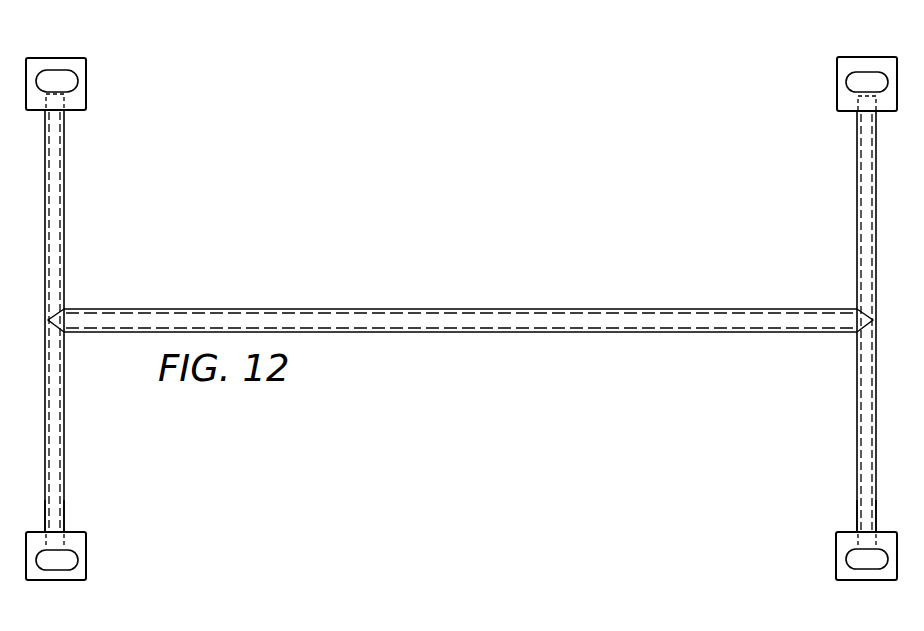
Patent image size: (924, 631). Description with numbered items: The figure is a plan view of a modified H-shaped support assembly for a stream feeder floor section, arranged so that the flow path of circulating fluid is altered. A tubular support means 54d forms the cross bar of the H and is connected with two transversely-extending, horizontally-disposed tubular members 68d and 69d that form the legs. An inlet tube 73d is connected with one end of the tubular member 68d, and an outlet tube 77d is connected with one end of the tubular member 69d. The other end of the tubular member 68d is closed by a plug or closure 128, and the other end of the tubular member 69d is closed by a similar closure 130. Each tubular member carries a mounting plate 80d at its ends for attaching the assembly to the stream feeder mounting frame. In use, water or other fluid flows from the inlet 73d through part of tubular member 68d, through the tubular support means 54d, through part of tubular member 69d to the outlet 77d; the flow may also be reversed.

The tubular support means 54d is at (420, 306).
The tubular member 68d is at (65, 377).
The tubular member 69d is at (857, 377).
The inlet tube 73d is at (67, 542).
The outlet tube 77d is at (852, 540).
The mounting plate 80d is at (33, 58).
The closure 128 is at (55, 92).
The closure 130 is at (871, 96).